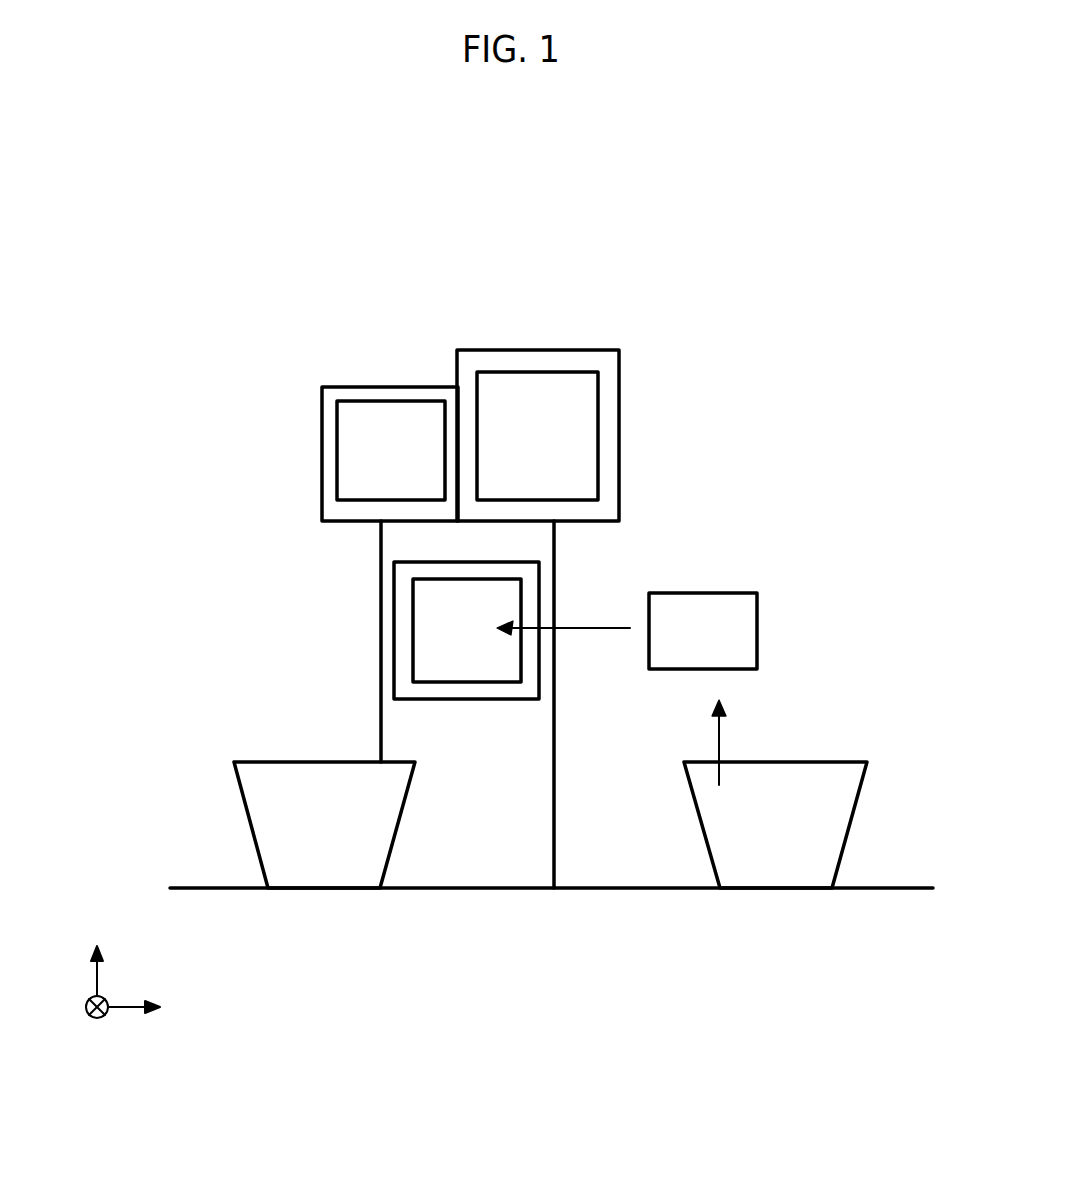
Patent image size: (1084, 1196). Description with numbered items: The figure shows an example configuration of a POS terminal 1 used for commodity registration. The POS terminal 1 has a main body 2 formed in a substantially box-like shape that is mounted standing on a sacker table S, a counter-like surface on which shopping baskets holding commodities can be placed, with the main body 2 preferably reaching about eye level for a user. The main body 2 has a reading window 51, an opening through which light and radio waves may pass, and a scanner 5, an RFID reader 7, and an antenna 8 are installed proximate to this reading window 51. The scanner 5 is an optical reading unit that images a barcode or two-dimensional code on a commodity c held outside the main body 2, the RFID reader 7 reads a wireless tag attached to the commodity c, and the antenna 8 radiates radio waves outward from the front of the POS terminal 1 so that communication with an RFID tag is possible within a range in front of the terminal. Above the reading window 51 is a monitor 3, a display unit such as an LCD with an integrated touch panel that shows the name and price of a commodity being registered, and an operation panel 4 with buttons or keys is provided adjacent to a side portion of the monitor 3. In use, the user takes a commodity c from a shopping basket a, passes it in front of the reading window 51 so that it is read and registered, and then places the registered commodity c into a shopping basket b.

The POS terminal 1 is at (541, 235).
The main body 2 is at (537, 793).
The monitor 3 is at (534, 381).
The operation panel 4 is at (385, 420).
The scanner 5 is at (514, 630).
The RFID reader 7 is at (514, 630).
The antenna 8 is at (507, 598).
The reading window 51 is at (398, 575).
The shopping basket a is at (830, 762).
The shopping basket b is at (282, 760).
The commodity c is at (745, 630).
The sacker table S is at (903, 886).